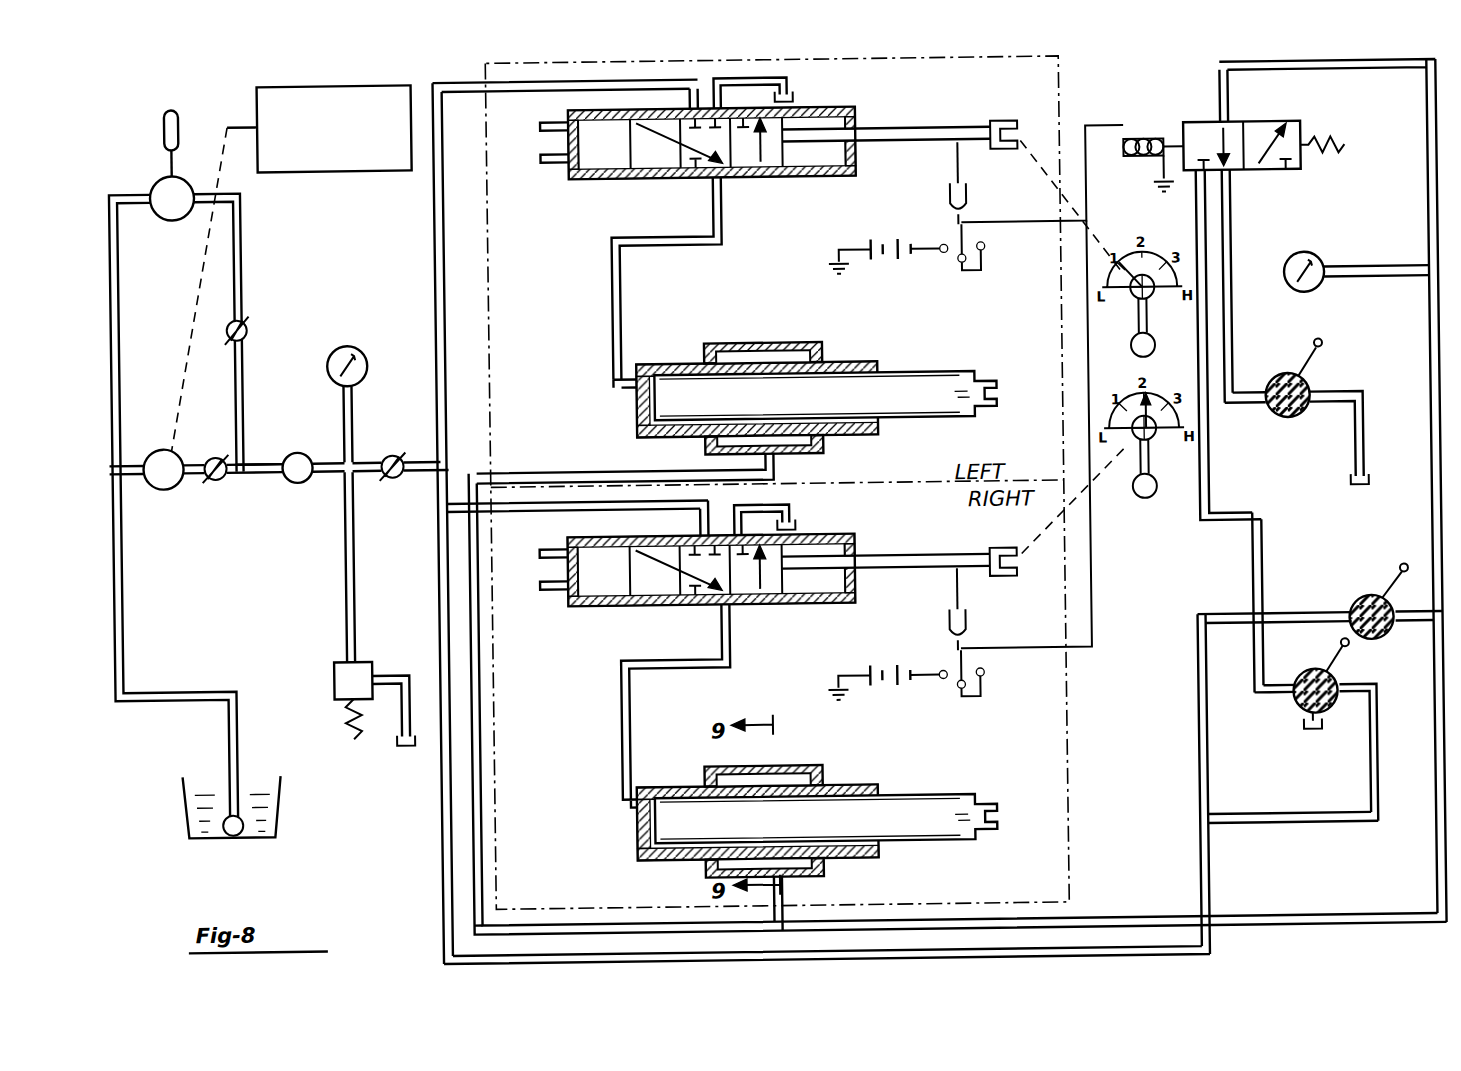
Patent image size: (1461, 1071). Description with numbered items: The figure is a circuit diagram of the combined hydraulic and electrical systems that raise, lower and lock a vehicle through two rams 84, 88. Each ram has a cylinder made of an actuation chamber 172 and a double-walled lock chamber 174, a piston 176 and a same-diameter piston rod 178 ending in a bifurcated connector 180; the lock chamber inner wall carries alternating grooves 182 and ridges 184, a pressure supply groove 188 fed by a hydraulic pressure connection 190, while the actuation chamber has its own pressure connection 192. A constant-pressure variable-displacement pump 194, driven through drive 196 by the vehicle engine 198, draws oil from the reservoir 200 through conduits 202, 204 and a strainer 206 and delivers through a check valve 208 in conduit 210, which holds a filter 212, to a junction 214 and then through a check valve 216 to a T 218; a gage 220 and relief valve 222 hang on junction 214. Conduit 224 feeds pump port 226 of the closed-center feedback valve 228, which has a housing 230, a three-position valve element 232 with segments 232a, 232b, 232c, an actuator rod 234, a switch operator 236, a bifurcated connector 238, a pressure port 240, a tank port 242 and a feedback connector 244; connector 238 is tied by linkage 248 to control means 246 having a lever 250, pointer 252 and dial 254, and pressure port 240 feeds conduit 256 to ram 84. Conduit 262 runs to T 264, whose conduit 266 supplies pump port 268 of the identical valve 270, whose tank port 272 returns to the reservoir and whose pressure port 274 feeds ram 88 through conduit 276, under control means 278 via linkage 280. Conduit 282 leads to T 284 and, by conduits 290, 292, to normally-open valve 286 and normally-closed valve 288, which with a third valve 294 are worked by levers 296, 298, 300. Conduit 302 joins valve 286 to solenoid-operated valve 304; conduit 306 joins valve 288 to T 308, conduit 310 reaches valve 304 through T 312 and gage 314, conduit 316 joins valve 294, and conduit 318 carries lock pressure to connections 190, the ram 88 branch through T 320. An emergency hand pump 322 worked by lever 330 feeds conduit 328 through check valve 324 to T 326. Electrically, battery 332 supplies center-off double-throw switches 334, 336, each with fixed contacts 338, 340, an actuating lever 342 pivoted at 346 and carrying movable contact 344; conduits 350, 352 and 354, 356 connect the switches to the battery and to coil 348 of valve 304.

The ram 84 is at (880, 462).
The ram 88 is at (892, 884).
The actuation chamber 172 is at (640, 362).
The lock chamber 174 is at (745, 333).
The piston 176 is at (643, 415).
The piston rod 178 is at (910, 404).
The bifurcated connector 180 is at (985, 415).
The grooves 182 is at (730, 378).
The ridges 184 is at (790, 418).
The pressure supply groove 188 is at (775, 378).
The hydraulic pressure connection 190 is at (766, 459).
The hydraulic pressure connection 192 is at (640, 380).
The pump 194 is at (172, 450).
The drive connection 196 is at (185, 303).
The vehicle engine 198 is at (334, 128).
The reservoir 200 is at (186, 815).
The conduit 202 is at (140, 480).
The conduit 204 is at (121, 247).
The strainer 206 is at (236, 840).
The check valve 208 is at (222, 480).
The conduit 210 is at (265, 458).
The filter 212 is at (310, 483).
The junction 214 is at (392, 455).
The check valve 216 is at (400, 475).
The T 218 is at (447, 455).
The gage 220 is at (360, 350).
The relief valve 222 is at (333, 684).
The conduit 224 is at (438, 239).
The pump port 226 is at (723, 108).
The closed-center valve 228 is at (826, 210).
The housing 230 is at (855, 110).
The three-position valve element 232 is at (624, 148).
The segment 232a is at (652, 180).
The segment 232b is at (708, 120).
The segment 232c is at (752, 182).
The actuator rod 234 is at (948, 122).
The switch operator 236 is at (955, 160).
The bifurcated connector 238 is at (1030, 100).
The pressure port 240 is at (715, 200).
The tank port 242 is at (760, 100).
The feedback connector 244 is at (540, 120).
The operator-operable control means 246 is at (1105, 295).
The linkage 248 is at (1055, 117).
The lever 250 is at (1130, 352).
The pointer 252 is at (1125, 255).
The dial 254 is at (1180, 262).
The conduit 256 is at (615, 298).
The conduit 262 is at (443, 505).
The T 264 is at (446, 515).
The conduit 266 is at (533, 505).
The pump port 268 is at (700, 528).
The control valve 270 is at (876, 656).
The tank port 272 is at (764, 519).
The pressure port 274 is at (721, 615).
The conduit 276 is at (619, 728).
The operator-operable control means 278 is at (1162, 434).
The linkage 280 is at (1074, 565).
The conduit 282 is at (440, 826).
The T 284 is at (1198, 837).
The operator-operable valve 286 is at (1333, 706).
The operator-operable valve 288 is at (1356, 606).
The conduit 290 is at (1313, 818).
The conduit 292 is at (1196, 673).
The valve 294 is at (1305, 384).
The lever 296 is at (1332, 655).
The lever 298 is at (1395, 560).
The lever 300 is at (1325, 345).
The conduit 302 is at (1251, 588).
The solenoid-operated valve 304 is at (1276, 122).
The conduit 306 is at (1428, 640).
The T 308 is at (1428, 680).
The conduit 310 is at (1275, 70).
The T 312 is at (1428, 282).
The gage 314 is at (1312, 256).
The conduit 316 is at (1212, 207).
The conduit 318 is at (469, 904).
The T 320 is at (778, 934).
The operator-operable pump 322 is at (155, 185).
The check valve 324 is at (250, 325).
The T 326 is at (245, 460).
The conduit 328 is at (245, 215).
The lever 330 is at (176, 150).
The electric power source 332 is at (910, 291).
The switch 334 is at (1040, 247).
The switch 336 is at (1050, 676).
The fixed contact 338 is at (940, 245).
The fixed contact 340 is at (984, 250).
The actuating lever 342 is at (950, 210).
The movable contact 344 is at (965, 272).
The pivot 346 is at (966, 210).
The operating coil 348 is at (1150, 135).
The electrical conduit 350 is at (925, 252).
The electrical conduit 352 is at (1091, 218).
The electrical conduit 354 is at (925, 685).
The electrical conduit 356 is at (1093, 650).